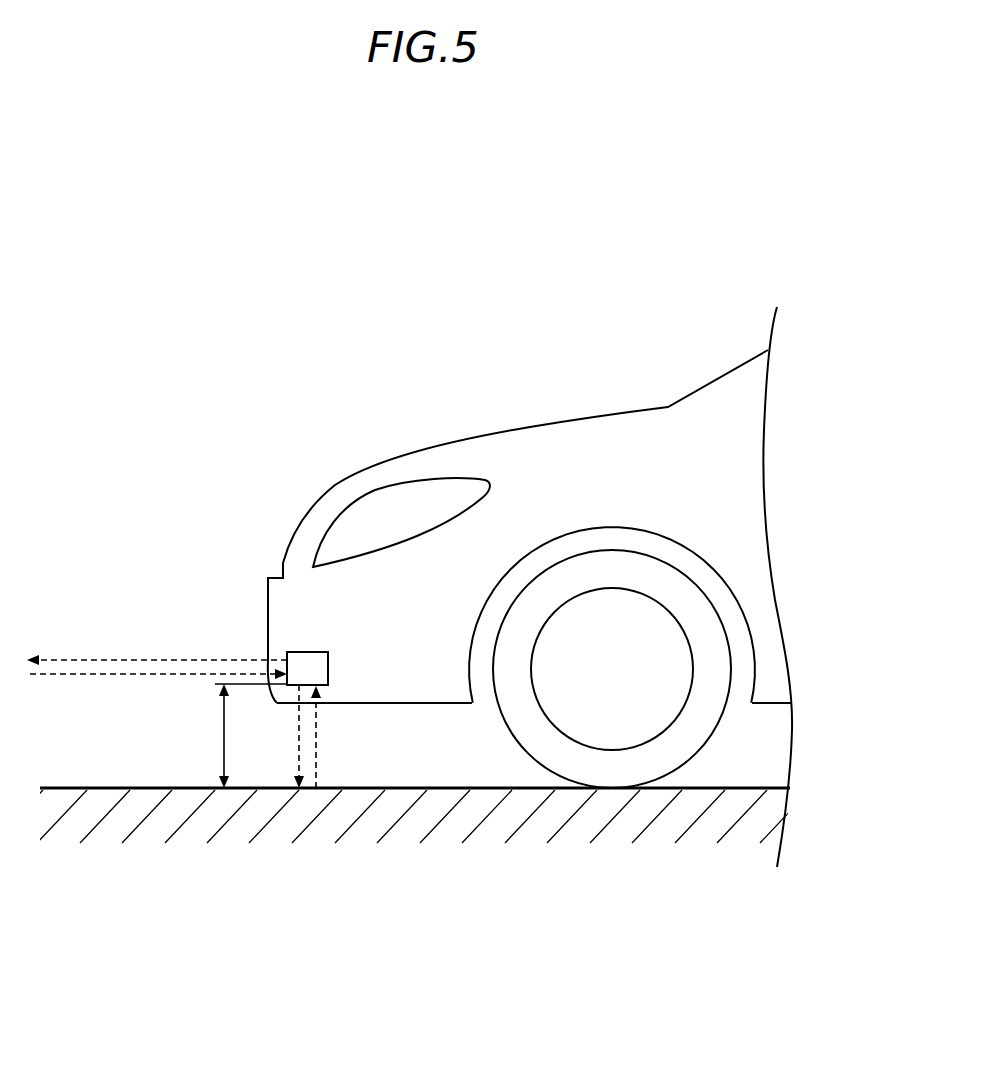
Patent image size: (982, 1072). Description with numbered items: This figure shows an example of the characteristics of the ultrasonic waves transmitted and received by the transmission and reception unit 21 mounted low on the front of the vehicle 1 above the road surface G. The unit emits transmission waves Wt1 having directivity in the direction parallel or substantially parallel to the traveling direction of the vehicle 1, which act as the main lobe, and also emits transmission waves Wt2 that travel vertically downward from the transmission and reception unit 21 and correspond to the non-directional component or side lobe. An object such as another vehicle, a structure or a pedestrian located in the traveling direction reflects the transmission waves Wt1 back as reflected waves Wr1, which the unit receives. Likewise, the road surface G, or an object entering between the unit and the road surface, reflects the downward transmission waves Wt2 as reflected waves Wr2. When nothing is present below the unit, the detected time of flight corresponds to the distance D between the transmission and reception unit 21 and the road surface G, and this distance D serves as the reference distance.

The vehicle 1 is at (541, 361).
The transmission and reception unit 21 is at (308, 652).
The transmission waves Wt1 is at (95, 658).
The reflected waves Wr1 is at (92, 677).
The transmission waves Wt2 is at (299, 727).
The reflected waves Wr2 is at (316, 737).
The distance D is at (242, 736).
The road surface G is at (405, 787).